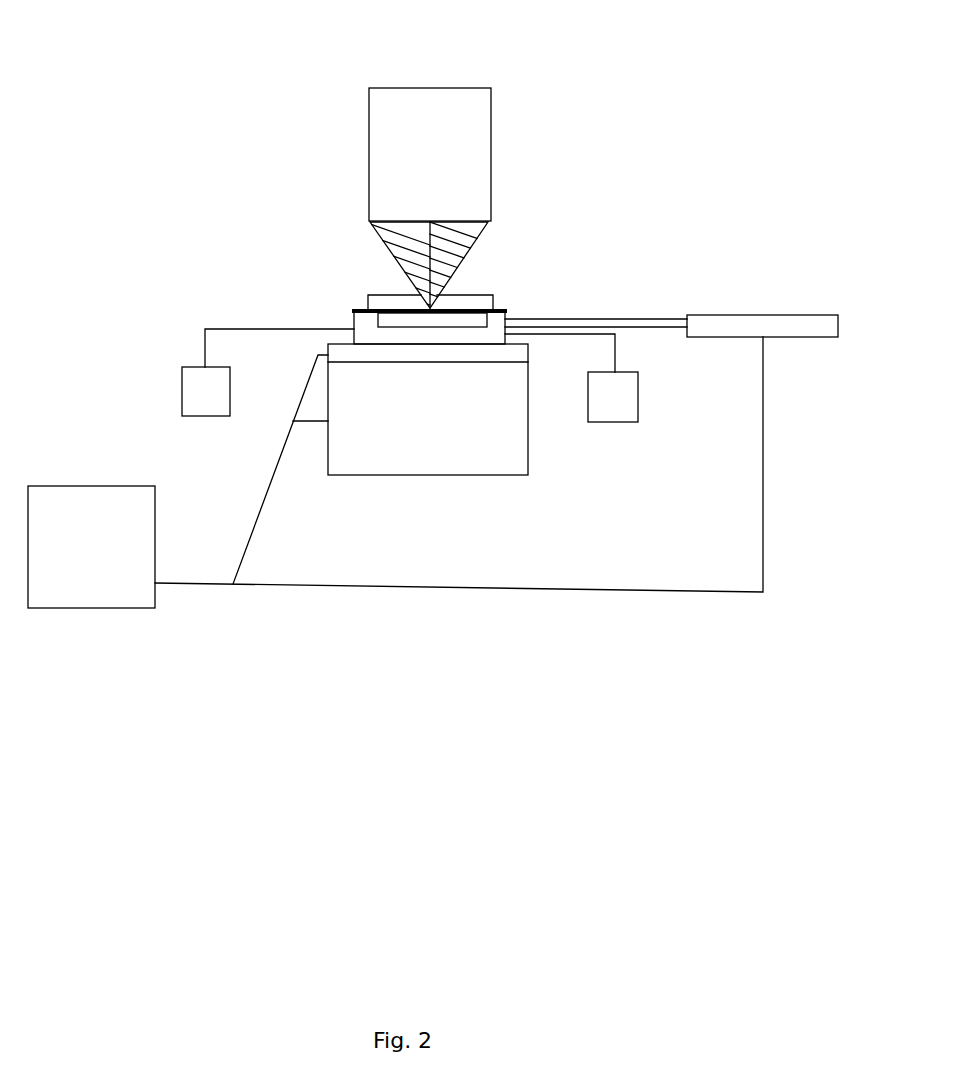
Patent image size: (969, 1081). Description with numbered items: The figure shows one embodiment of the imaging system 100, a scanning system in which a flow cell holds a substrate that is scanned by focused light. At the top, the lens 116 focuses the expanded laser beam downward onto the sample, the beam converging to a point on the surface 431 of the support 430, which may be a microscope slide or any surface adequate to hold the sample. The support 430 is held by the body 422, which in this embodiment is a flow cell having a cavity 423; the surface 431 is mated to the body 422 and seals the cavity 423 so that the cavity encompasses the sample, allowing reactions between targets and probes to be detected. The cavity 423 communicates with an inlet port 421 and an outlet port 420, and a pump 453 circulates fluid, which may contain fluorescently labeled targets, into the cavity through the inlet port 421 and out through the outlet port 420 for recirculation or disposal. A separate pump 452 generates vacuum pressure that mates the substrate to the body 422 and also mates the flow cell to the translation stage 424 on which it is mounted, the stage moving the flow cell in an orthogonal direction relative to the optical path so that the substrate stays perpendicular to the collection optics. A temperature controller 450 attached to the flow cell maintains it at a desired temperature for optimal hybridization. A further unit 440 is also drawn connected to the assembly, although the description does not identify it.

The imaging system 100 is at (632, 105).
The lens 116 is at (347, 118).
The outlet port 420 is at (350, 305).
The inlet port 421 is at (325, 343).
The body 422 is at (475, 321).
The cavity 423 is at (513, 303).
The translation stage 424 is at (517, 488).
The support 430 is at (498, 282).
The surface 431 is at (363, 287).
The controller 440 is at (55, 475).
The temperature controller 450 is at (773, 302).
The pump 452 is at (655, 407).
The pump 453 is at (157, 373).